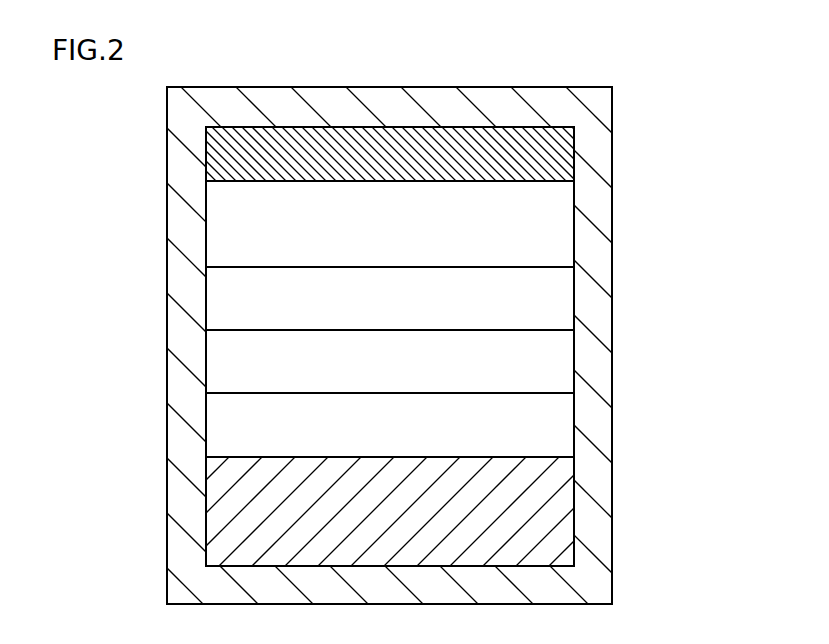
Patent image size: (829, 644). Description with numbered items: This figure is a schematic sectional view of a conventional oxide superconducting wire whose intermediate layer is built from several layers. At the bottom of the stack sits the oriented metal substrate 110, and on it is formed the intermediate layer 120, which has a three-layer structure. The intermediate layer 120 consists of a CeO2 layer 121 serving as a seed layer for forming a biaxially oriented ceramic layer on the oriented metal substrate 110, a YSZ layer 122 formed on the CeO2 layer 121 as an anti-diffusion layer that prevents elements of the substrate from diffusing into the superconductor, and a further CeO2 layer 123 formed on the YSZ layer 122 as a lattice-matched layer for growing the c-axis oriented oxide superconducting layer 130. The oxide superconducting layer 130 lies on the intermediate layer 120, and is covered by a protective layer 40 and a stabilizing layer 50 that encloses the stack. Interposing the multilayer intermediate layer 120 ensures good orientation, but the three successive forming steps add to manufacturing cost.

The stabilizing layer 50 is at (553, 111).
The protective layer 40 is at (553, 155).
The oxide superconducting layer 130 is at (553, 223).
The intermediate layer 120 is at (697, 298).
The CeO2 layer 123 is at (553, 307).
The YSZ layer 122 is at (553, 370).
The CeO2 layer 121 is at (553, 433).
The oriented metal substrate 110 is at (552, 513).